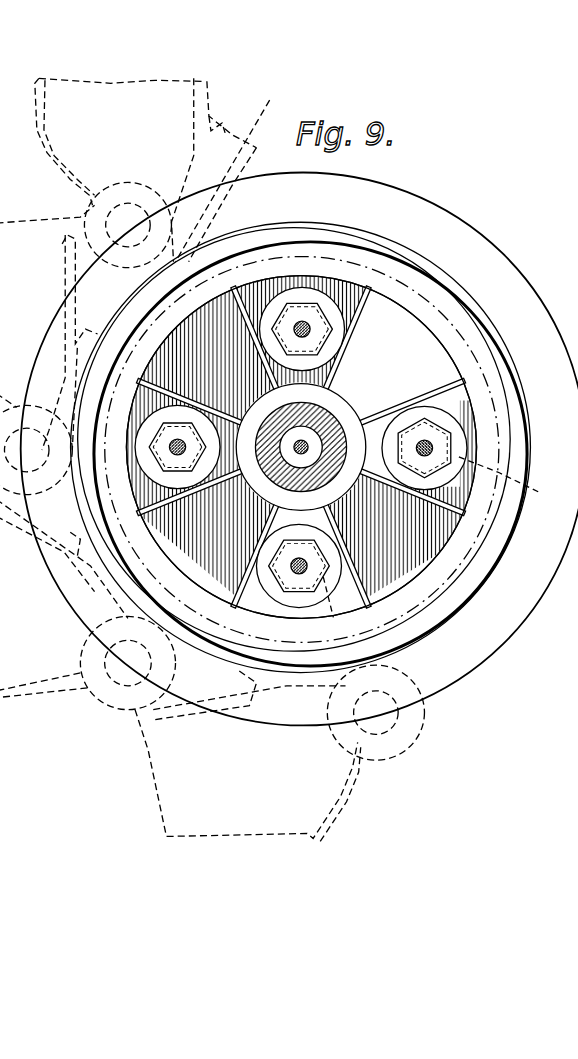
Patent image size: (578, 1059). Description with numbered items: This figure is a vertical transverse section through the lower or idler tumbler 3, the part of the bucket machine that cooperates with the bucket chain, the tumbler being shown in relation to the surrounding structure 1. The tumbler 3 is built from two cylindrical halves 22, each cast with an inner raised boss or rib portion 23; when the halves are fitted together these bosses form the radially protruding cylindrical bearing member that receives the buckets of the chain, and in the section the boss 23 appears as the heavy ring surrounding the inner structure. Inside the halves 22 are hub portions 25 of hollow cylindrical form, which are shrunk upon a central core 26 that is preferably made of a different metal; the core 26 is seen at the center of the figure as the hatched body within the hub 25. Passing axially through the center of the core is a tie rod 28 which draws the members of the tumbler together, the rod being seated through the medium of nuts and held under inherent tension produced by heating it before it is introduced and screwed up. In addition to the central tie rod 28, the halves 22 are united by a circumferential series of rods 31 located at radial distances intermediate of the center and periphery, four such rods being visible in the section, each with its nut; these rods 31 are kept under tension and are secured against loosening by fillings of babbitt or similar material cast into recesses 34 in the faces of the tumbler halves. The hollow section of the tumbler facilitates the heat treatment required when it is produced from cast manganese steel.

The frame bracket 1 is at (38, 122).
The idler or lower tumbler 3 is at (475, 231).
The cylindrical halves 22 is at (498, 435).
The inner raised boss or rib portion 23 is at (276, 224).
The hub portions 25 is at (258, 488).
The central core 26 is at (327, 473).
The tie rod 28 is at (304, 444).
The rods 31 is at (310, 332).
The recesses 34 is at (441, 547).